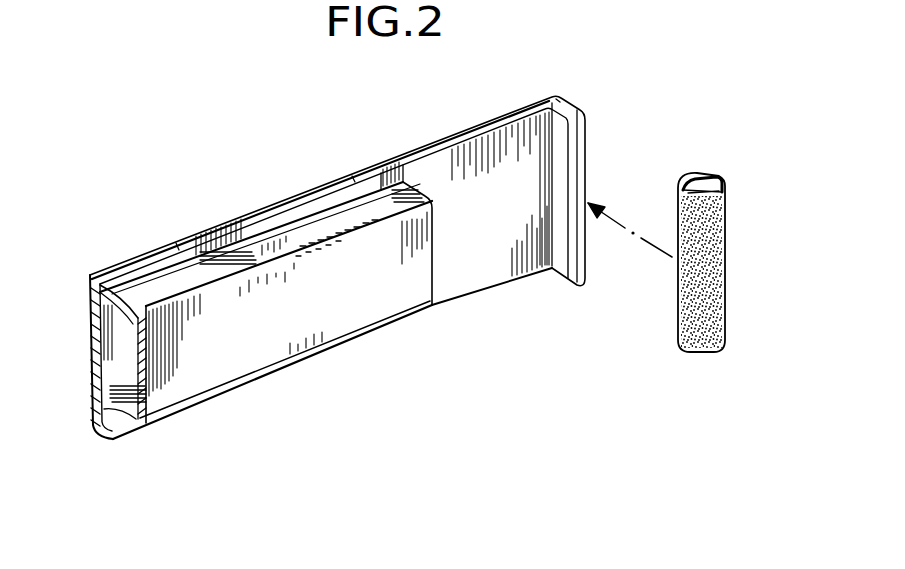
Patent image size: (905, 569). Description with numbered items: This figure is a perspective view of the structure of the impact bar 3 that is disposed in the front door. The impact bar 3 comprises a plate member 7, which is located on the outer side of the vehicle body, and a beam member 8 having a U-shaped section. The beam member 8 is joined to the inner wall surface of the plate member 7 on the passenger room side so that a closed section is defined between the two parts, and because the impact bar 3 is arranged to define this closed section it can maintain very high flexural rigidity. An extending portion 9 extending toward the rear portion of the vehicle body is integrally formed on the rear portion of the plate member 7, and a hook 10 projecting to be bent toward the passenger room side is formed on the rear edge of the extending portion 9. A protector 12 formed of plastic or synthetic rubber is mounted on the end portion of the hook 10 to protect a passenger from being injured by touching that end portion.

The impact bar 3 is at (274, 204).
The plate member 7 is at (110, 377).
The beam member 8 is at (362, 318).
The extending portion 9 is at (460, 160).
The hook 10 is at (567, 160).
The protector 12 is at (712, 283).